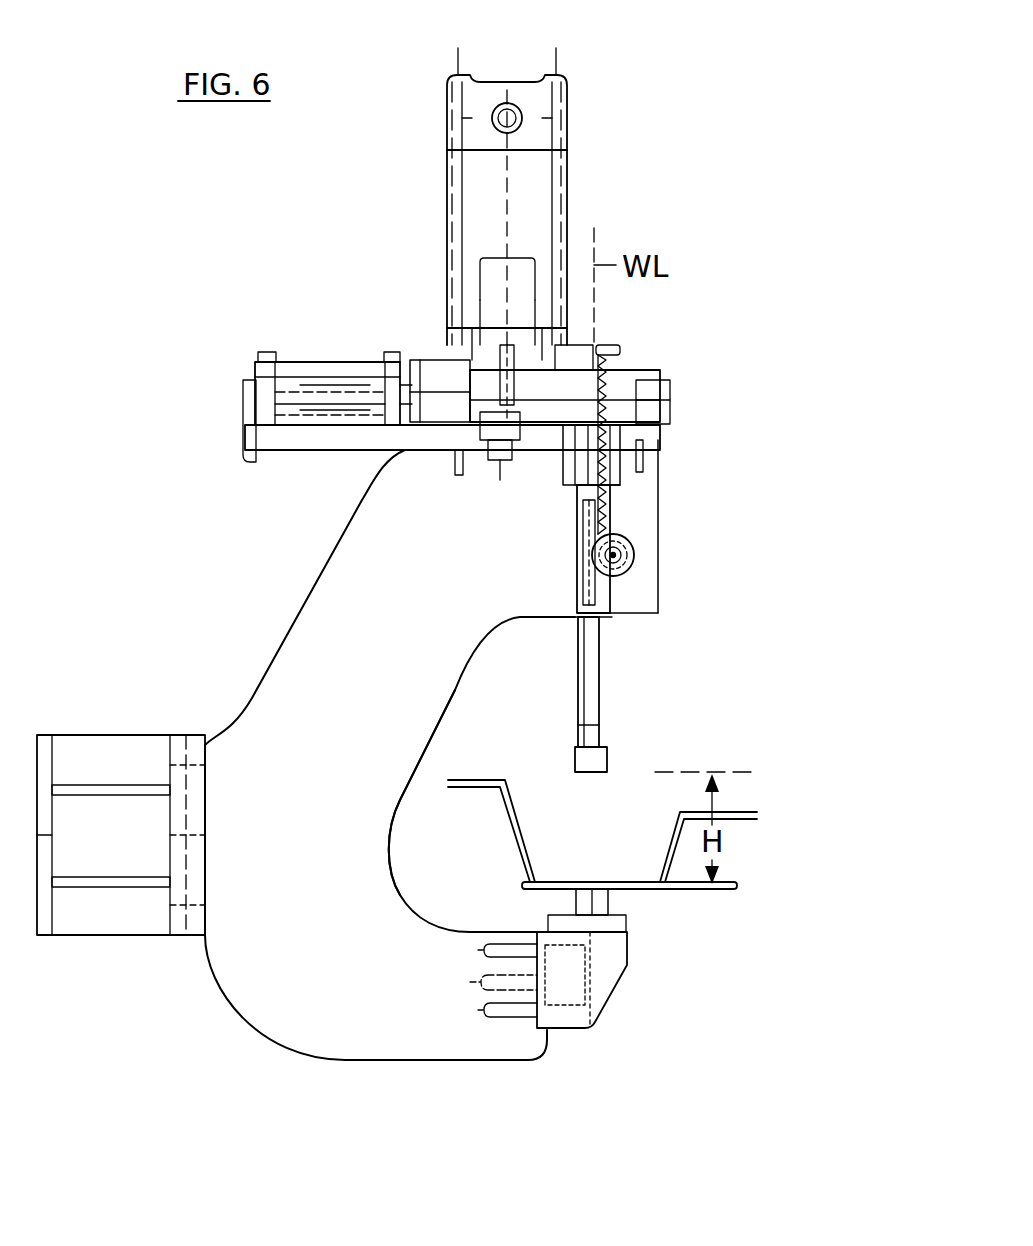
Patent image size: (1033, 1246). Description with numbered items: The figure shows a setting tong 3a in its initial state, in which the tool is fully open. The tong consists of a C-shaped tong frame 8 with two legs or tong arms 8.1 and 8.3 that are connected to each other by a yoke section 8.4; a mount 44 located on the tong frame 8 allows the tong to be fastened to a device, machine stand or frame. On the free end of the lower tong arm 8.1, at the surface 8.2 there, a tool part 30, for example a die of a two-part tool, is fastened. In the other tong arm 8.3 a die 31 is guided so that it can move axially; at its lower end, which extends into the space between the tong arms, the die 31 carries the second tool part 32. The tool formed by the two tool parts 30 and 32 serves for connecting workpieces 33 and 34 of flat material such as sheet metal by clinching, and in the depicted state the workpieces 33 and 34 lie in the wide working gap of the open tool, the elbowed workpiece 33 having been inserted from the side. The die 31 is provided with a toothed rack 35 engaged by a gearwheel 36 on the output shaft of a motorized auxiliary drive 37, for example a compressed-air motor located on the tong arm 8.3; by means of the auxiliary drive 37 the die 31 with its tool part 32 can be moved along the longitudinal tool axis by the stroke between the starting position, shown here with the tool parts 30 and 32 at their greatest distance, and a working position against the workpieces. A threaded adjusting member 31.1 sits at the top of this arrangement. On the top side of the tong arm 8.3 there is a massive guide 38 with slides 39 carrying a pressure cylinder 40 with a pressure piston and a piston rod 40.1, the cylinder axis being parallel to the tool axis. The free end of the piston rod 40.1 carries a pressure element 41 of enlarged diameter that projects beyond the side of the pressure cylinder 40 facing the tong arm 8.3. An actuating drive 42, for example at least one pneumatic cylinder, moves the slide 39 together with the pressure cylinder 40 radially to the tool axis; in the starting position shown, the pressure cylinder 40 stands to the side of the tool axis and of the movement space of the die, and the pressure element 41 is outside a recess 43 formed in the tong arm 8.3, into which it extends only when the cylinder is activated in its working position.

The setting tong 3a is at (768, 316).
The C-shaped tong frame 8 is at (238, 643).
The tong arm 8.1 is at (436, 1074).
The surface 8.2 is at (627, 930).
The tong arm 8.3 is at (672, 539).
The yoke section 8.4 is at (425, 694).
The tool part 30 is at (590, 900).
The die 31 is at (592, 697).
The adjusting screw 31.1 is at (620, 349).
The tool part 32 is at (620, 749).
The workpiece 33 is at (514, 812).
The workpiece 34 is at (673, 864).
The toothed rack 35 is at (600, 511).
The gearwheel 36 is at (630, 562).
The motorized auxiliary drive 37 is at (633, 541).
The guide 38 is at (660, 400).
The slide 39 is at (424, 360).
The pressure cylinder 40 is at (530, 195).
The piston rod 40.1 is at (545, 355).
The pressure element 41 is at (467, 464).
The actuating drive 42 is at (327, 380).
The recess 43 is at (608, 476).
The mount 44 is at (121, 862).